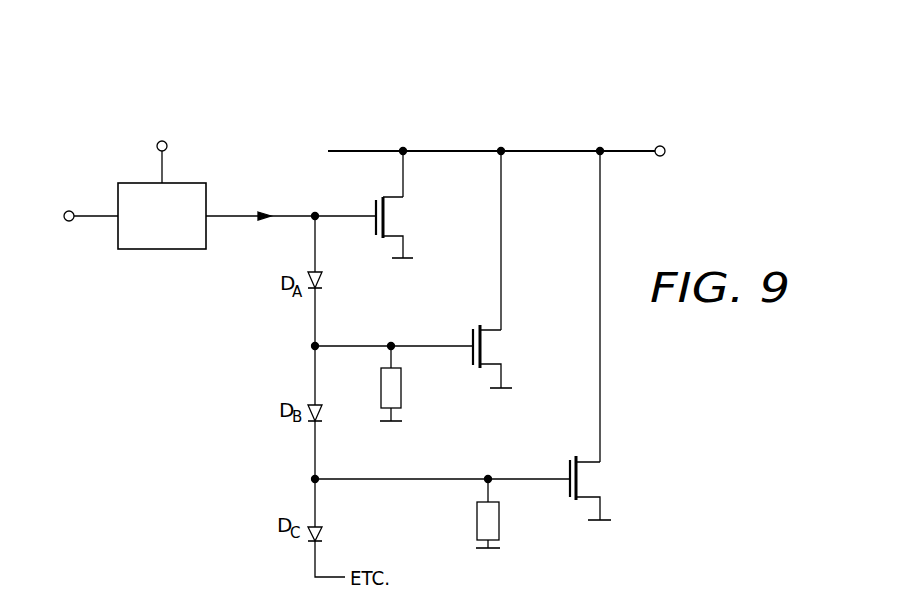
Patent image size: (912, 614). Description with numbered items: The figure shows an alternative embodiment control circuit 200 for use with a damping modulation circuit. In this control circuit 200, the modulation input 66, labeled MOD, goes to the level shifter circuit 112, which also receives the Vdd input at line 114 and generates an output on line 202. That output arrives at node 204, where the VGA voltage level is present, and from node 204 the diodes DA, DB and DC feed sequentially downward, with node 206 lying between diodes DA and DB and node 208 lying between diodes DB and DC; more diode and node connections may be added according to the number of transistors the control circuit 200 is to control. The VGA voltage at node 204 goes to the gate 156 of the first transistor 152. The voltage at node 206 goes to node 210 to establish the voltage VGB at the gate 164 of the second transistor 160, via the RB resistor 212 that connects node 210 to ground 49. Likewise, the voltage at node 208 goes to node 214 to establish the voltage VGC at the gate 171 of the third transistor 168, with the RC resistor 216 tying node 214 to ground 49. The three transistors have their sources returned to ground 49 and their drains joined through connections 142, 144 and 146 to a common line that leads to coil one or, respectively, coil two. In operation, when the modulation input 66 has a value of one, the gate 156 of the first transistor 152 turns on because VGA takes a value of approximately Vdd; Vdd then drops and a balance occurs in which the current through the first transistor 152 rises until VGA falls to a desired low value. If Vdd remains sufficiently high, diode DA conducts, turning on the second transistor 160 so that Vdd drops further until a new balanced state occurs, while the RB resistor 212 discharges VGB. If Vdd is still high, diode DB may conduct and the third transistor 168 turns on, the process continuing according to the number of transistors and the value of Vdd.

The control circuit 200 is at (633, 88).
The modulation input 66 is at (97, 220).
The Vdd input line 114 is at (160, 164).
The level shifter circuit 112 is at (162, 251).
The output line 202 is at (240, 212).
The node 204 is at (311, 220).
The node 206 is at (311, 346).
The node 208 is at (311, 479).
The connection 142 is at (403, 148).
The connection 144 is at (501, 148).
The connection 146 is at (600, 148).
The gate 156 is at (358, 212).
The ND1A transistor 152 is at (417, 197).
The gate 164 is at (460, 344).
The ND1B transistor 160 is at (515, 330).
The gate 171 is at (556, 476).
The ND1C transistor 168 is at (610, 460).
The ground 49 is at (413, 259).
The node 210 is at (387, 350).
The RB resistor 212 is at (378, 395).
The node 214 is at (485, 483).
The RC resistor 216 is at (475, 522).